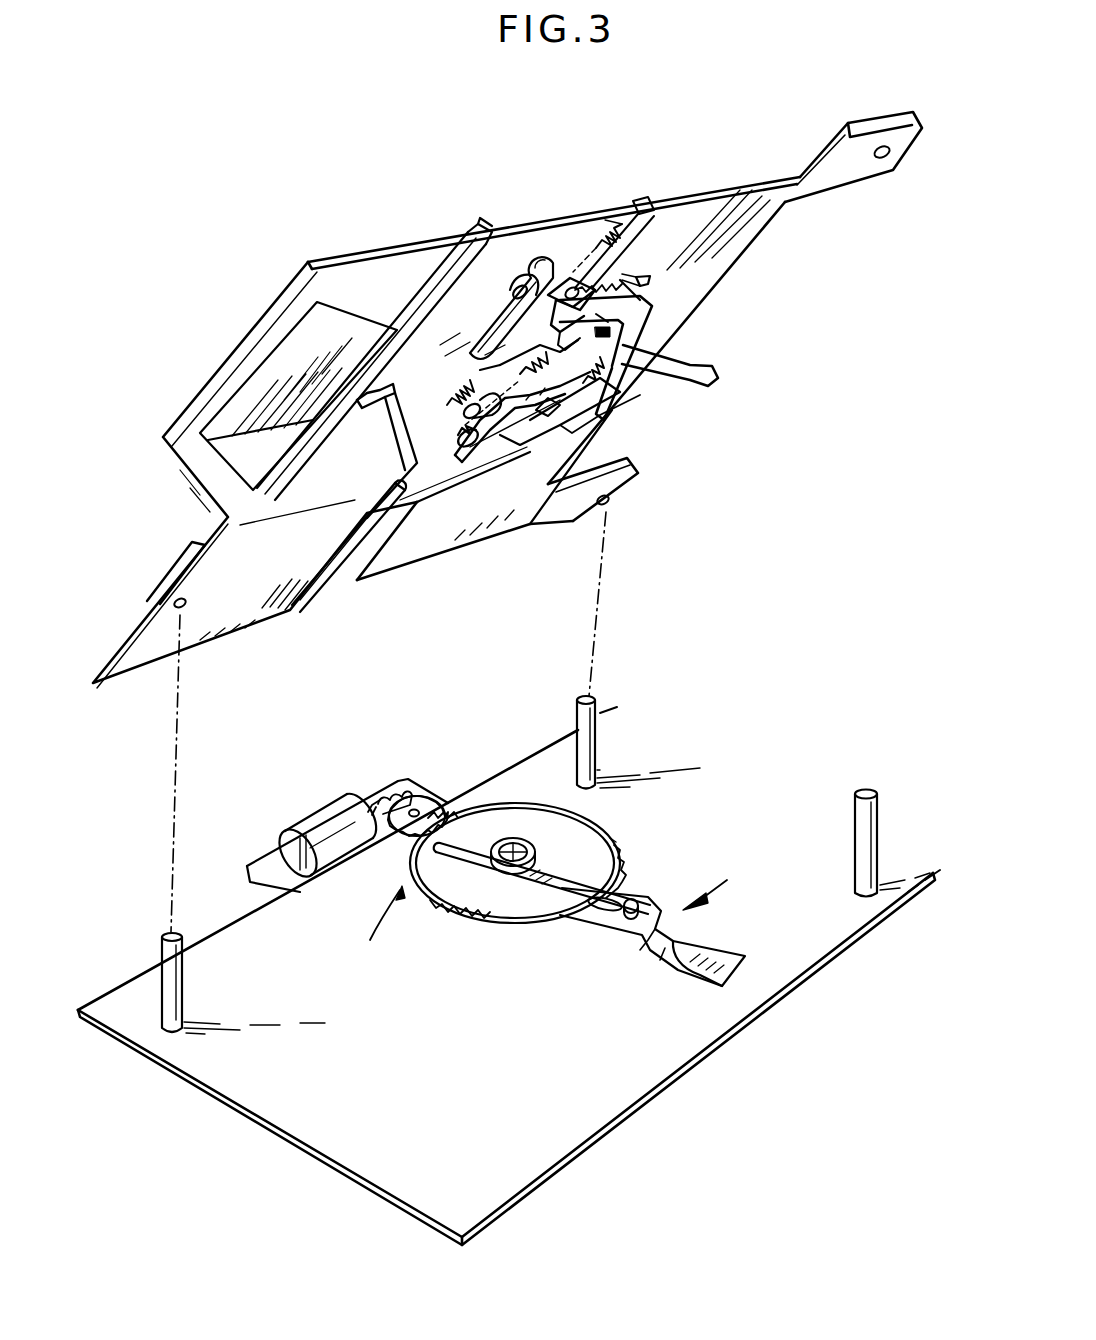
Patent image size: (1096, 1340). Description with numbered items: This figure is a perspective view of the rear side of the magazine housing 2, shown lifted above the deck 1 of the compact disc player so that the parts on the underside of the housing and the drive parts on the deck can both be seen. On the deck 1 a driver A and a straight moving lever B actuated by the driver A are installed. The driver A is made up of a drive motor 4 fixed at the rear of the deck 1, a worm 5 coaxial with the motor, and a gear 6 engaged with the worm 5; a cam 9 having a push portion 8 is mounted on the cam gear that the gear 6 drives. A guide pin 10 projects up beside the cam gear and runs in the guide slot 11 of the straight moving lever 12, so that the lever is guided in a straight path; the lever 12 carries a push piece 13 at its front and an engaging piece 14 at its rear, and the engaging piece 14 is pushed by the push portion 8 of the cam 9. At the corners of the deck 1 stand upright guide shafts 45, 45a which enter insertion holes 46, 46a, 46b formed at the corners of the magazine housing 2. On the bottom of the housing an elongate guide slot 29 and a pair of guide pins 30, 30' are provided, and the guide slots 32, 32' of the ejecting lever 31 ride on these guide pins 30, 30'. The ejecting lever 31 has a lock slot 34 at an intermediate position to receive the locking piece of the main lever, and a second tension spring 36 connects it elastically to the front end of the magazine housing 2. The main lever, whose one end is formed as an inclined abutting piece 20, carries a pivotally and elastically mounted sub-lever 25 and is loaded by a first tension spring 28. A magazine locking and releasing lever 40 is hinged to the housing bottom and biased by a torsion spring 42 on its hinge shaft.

The deck 1 is at (348, 1142).
The magazine housing 2 is at (351, 245).
The drive motor 4 is at (320, 827).
The worm 5 is at (384, 787).
The gear 6 is at (432, 796).
The push portion 8 is at (505, 845).
The cam 9 is at (522, 840).
The guide pin 10 is at (634, 900).
The guide slot 11 is at (610, 907).
The straight moving lever 12 is at (650, 953).
The push piece 13 is at (690, 942).
The engaging piece 14 is at (480, 853).
The abutting piece 20 is at (655, 296).
The sub-lever 25 is at (710, 372).
The first tension spring 28 is at (527, 275).
The elongate guide slot 29 is at (357, 553).
The guide pin 30 is at (522, 493).
The guide pin 30' is at (494, 265).
The ejecting lever 31 is at (427, 428).
The guide slot 32 is at (374, 347).
The guide slot 32' is at (349, 546).
The lock slot 34 is at (465, 460).
The second tension spring 36 is at (604, 240).
The magazine locking and releasing lever 40 is at (646, 285).
The torsion spring 42 is at (647, 280).
The guide shaft 45 is at (160, 947).
The guide shaft 45a is at (596, 752).
The insertion hole 46 is at (185, 600).
The insertion hole 46a is at (617, 503).
The insertion hole 46b is at (880, 150).
The driver A is at (370, 972).
The straight moving lever B is at (760, 894).